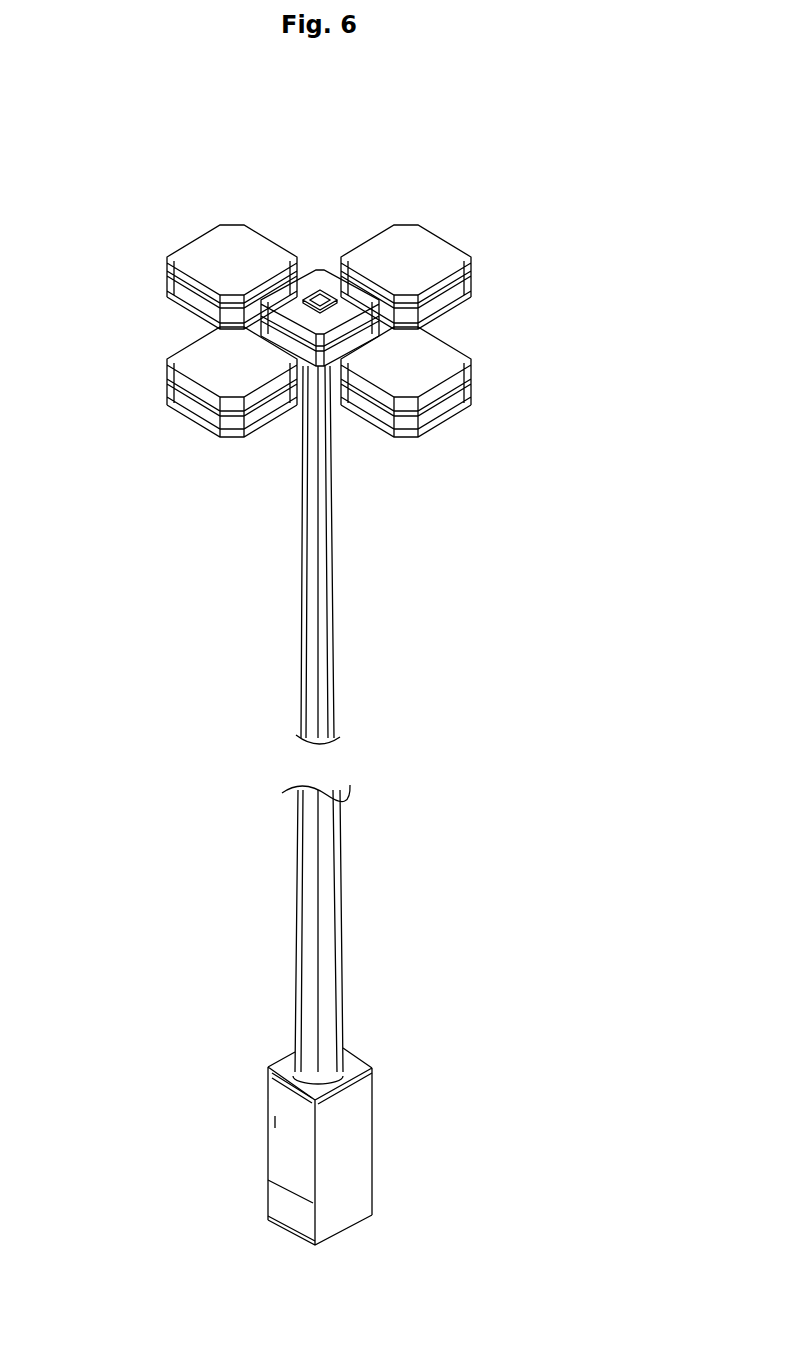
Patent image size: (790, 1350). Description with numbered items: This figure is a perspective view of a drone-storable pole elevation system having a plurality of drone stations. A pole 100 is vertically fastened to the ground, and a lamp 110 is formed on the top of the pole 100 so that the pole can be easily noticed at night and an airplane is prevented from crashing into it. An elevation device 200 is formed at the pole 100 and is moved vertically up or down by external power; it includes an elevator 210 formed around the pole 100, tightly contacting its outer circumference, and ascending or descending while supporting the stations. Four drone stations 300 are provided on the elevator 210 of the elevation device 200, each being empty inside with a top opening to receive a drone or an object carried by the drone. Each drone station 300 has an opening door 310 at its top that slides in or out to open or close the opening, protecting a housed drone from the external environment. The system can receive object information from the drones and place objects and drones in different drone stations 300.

The pole 100 is at (340, 890).
The lamp 110 is at (318, 296).
The elevation device 200 is at (312, 266).
The elevator 210 is at (386, 310).
The drone station 300 is at (452, 420).
The opening door 310 is at (195, 363).